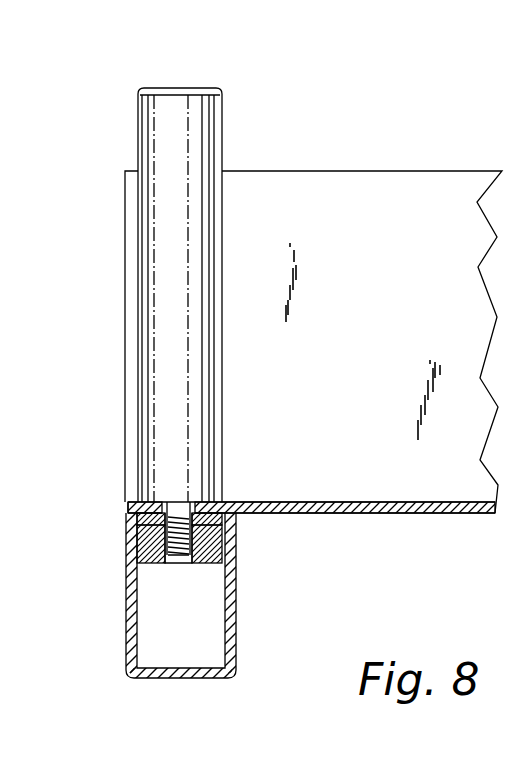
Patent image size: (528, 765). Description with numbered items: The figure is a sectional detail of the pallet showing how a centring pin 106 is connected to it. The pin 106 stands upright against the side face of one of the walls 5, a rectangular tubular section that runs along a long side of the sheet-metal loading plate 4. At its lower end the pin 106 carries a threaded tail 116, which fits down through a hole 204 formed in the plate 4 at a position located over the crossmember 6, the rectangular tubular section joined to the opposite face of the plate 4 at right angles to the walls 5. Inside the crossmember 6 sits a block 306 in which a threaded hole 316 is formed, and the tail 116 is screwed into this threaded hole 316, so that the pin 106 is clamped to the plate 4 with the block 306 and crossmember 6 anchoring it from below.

The wall 5 is at (424, 187).
The centring pin 106 is at (214, 131).
The loading plate 4 is at (467, 513).
The crossmember 6 is at (236, 657).
The block 306 is at (137, 557).
The threaded hole 316 is at (143, 548).
The hole 204 is at (195, 500).
The threaded tail 116 is at (182, 563).